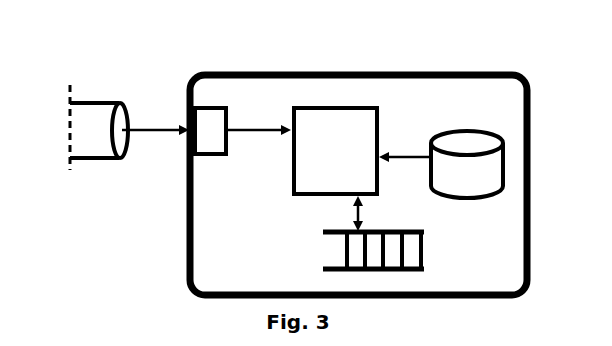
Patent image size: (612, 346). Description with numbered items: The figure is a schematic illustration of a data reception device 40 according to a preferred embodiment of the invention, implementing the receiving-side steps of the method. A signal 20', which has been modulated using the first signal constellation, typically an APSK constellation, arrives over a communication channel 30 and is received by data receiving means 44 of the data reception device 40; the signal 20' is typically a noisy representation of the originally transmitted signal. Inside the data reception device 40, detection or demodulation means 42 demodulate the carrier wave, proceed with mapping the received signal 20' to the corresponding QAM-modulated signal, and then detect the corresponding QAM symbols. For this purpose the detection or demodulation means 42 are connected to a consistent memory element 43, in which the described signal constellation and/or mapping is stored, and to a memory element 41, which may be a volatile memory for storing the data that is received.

The data reception device 40 is at (283, 72).
The communication channel 30 is at (87, 133).
The signal 20' is at (155, 104).
The data receiving means 44 is at (203, 156).
The detection or demodulation means 42 is at (308, 194).
The consistent memory element 43 is at (453, 140).
The memory element 41 is at (425, 258).